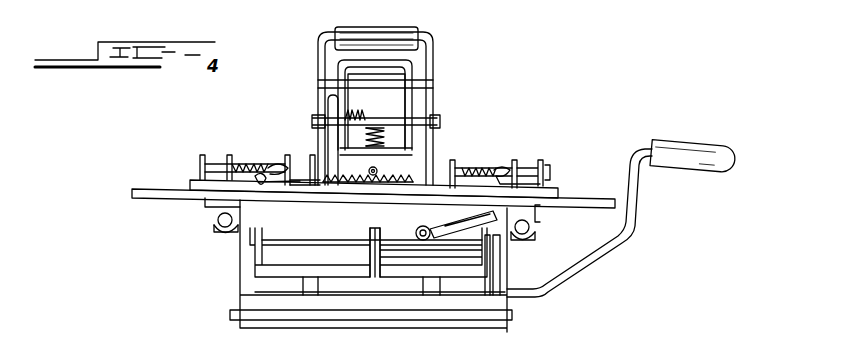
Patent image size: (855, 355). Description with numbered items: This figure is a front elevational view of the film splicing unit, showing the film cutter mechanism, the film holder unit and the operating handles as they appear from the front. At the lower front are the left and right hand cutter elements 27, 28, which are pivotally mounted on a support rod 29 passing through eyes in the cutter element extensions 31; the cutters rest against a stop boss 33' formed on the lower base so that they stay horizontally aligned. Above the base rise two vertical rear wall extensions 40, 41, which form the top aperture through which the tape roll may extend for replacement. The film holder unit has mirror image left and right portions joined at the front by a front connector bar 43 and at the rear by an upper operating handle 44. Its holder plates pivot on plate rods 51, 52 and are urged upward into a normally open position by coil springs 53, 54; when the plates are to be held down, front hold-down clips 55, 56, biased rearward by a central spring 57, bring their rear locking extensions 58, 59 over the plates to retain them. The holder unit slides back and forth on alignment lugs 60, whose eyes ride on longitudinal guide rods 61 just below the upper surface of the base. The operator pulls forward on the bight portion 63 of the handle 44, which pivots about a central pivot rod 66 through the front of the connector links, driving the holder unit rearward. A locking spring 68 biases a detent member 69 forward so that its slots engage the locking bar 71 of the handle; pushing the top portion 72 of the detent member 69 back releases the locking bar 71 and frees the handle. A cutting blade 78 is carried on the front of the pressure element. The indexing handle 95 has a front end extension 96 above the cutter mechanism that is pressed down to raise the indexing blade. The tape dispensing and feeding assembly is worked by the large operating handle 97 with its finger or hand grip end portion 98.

The left hand cutter element 27 is at (358, 278).
The right hand cutter element 28 is at (383, 278).
The support rod 29 is at (322, 243).
The cutter element extensions 31 is at (393, 245).
The stop boss 33' is at (380, 314).
The vertical rear wall extension 40 is at (413, 110).
The vertical rear wall extension 41 is at (330, 100).
The front connector bar 43 is at (143, 189).
The upper operating handle 44 is at (318, 110).
The plate rod 51 is at (248, 163).
The plate rod 52 is at (508, 170).
The coil spring 53 is at (271, 168).
The coil spring 54 is at (488, 170).
The front hold-down clip 55 is at (374, 240).
The front hold-down clip 56 is at (412, 181).
The central spring 57 is at (332, 186).
The rear locking extension 58 is at (262, 186).
The rear locking extension 59 is at (531, 165).
The alignment lugs 60 is at (217, 222).
The guide rods 61 is at (220, 233).
The bight portion 63 is at (405, 32).
The central pivot rod 66 is at (383, 142).
The locking spring 68 is at (363, 113).
The detent member 69 is at (342, 75).
The locking bar 71 is at (417, 88).
The top portion of detent member 72 is at (404, 62).
The cutting blade 78 is at (413, 170).
The indexing handle 95 is at (445, 230).
The front end extension 96 is at (537, 215).
The large operating handle 97 is at (633, 229).
The finger or hand grip end portion 98 is at (718, 170).